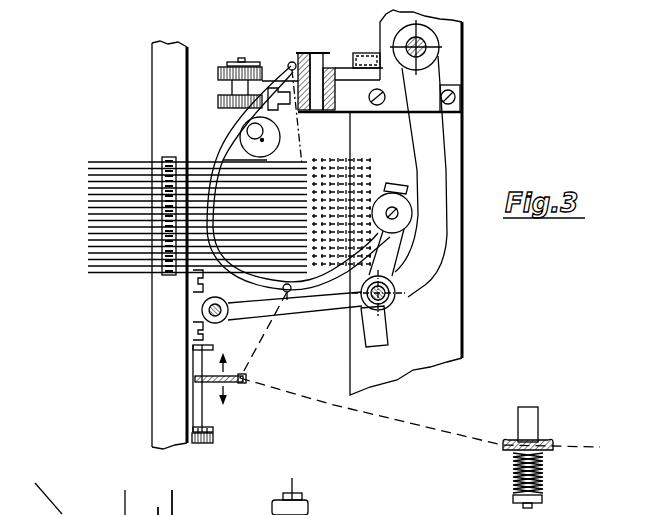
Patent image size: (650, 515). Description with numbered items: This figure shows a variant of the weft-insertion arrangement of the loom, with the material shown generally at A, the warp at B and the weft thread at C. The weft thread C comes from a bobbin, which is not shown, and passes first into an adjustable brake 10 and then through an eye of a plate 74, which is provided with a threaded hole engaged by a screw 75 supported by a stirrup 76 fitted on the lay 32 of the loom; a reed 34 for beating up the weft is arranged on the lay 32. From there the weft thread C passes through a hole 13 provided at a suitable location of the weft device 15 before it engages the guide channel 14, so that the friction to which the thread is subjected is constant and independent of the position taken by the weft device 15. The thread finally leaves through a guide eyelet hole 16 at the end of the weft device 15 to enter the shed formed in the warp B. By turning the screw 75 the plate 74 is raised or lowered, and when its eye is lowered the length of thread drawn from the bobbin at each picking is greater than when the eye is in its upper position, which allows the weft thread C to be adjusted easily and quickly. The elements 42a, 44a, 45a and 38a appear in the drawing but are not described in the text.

The adjustable brake 10 is at (515, 468).
The hole 13 is at (288, 294).
The guide channel 14 is at (220, 138).
The weft device 15 is at (322, 286).
The guide eyelet hole 16 is at (291, 62).
The lay 32 is at (165, 342).
The reed 34 is at (172, 158).
The plate 74 is at (212, 378).
The screw 75 is at (208, 413).
The stirrup 76 is at (190, 402).
The element 42a is at (133, 492).
The element 44a is at (188, 492).
The element 45a is at (165, 502).
The bolt 38a is at (260, 514).
The material A is at (333, 162).
The warp B is at (182, 217).
The weft thread C is at (311, 403).